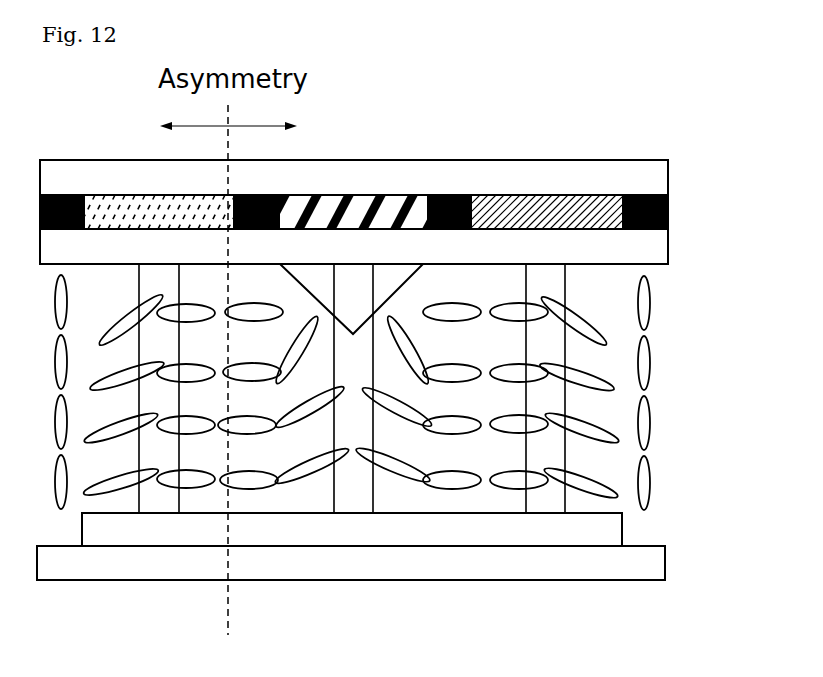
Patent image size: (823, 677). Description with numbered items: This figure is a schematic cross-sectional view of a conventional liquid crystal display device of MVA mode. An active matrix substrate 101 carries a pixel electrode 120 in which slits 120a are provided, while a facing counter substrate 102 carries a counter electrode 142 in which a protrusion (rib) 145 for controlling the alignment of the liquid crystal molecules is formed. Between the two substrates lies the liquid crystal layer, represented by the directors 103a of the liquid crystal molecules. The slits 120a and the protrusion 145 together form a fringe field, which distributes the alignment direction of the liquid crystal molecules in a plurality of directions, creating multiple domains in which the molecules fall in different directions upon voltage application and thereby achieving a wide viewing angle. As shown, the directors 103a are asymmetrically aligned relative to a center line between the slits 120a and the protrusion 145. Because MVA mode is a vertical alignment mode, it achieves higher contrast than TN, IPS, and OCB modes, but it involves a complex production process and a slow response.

The counter substrate 102 is at (688, 183).
The counter electrode 142 is at (660, 247).
The protrusion (rib) 145 is at (365, 280).
The active matrix substrate 101 is at (689, 548).
The pixel electrode 120 is at (498, 532).
The slits 120a is at (643, 553).
The directors of the liquid crystal molecules 103a is at (251, 486).